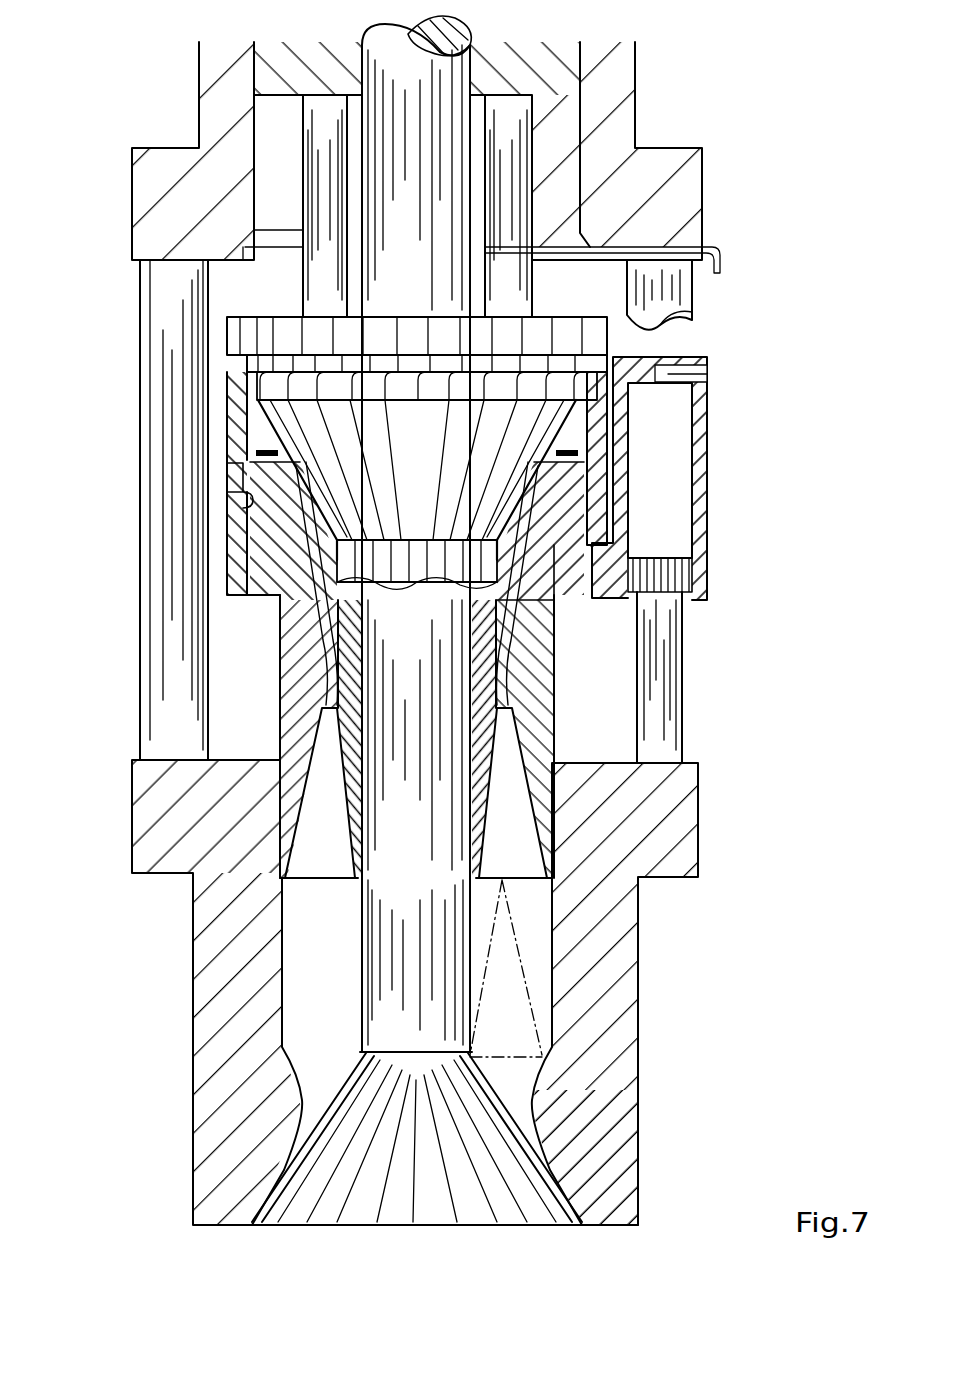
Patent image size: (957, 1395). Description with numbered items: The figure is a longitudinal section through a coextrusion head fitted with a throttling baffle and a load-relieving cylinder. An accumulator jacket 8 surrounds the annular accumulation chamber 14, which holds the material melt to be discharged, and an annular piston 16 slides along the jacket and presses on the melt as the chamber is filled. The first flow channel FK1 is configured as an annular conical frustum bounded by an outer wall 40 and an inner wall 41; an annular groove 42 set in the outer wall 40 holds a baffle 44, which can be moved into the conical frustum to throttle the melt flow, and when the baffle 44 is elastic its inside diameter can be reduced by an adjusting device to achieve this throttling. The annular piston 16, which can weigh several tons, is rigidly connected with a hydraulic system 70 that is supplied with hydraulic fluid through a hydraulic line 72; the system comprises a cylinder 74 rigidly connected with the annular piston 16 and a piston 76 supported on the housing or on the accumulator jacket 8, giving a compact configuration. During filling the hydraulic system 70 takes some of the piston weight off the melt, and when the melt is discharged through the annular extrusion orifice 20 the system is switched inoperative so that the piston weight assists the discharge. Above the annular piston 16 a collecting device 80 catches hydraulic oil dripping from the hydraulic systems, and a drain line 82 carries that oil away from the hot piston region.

The accumulator jacket 8 is at (617, 1107).
The annular accumulation chamber 14 is at (533, 938).
The annular piston 16 is at (445, 1020).
The annular extrusion orifice 20 is at (580, 1223).
The outer wall 40 is at (270, 597).
The inner wall 41 is at (277, 593).
The annular groove 42 is at (257, 445).
The baffle 44 is at (292, 470).
The first flow channel FK1 is at (317, 497).
The hydraulic system 70 is at (742, 557).
The hydraulic line 72 is at (697, 368).
The cylinder 74 is at (702, 465).
The piston 76 is at (673, 717).
The collecting device 80 is at (555, 233).
The drain line 82 is at (722, 265).